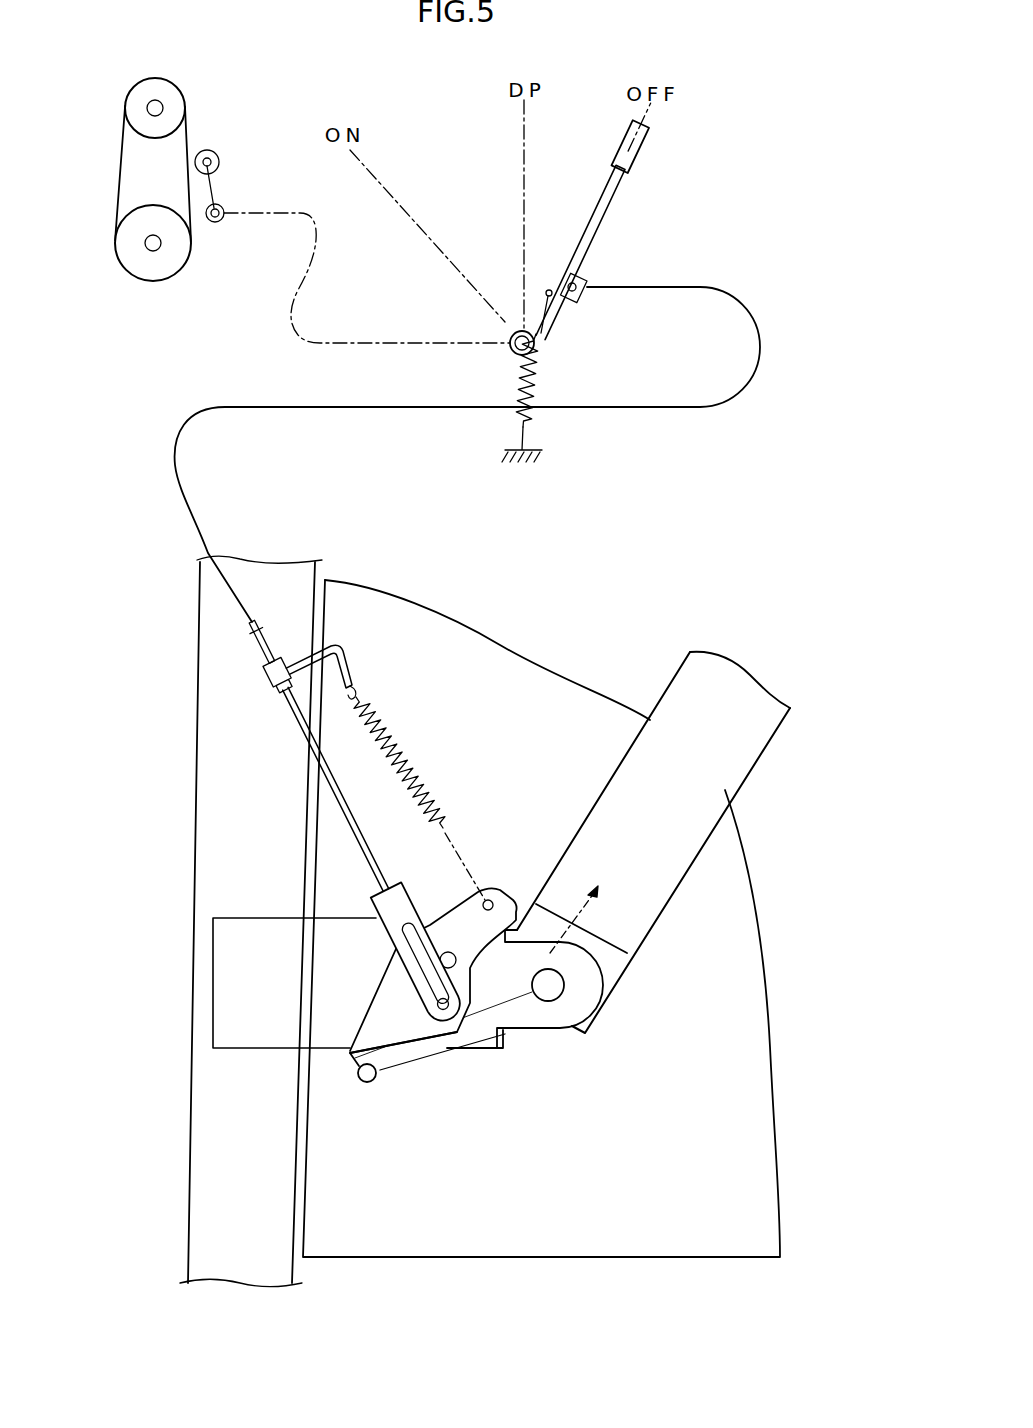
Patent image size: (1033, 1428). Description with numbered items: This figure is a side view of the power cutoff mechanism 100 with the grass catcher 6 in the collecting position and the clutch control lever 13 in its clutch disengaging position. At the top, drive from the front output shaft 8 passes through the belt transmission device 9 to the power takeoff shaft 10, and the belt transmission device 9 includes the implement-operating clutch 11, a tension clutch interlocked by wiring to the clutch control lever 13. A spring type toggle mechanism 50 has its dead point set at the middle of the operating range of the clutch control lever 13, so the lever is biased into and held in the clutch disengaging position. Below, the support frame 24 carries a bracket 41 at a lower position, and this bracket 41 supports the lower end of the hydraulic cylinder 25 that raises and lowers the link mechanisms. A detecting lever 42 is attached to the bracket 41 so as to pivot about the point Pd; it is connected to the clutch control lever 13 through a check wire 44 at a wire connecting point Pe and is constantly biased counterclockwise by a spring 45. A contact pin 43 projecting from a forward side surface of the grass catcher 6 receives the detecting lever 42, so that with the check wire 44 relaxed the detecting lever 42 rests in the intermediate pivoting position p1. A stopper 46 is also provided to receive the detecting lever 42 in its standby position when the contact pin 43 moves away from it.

The grass catcher 6 is at (722, 1045).
The front output shaft 8 is at (152, 108).
The belt transmission device 9 is at (196, 124).
The power takeoff shaft 10 is at (160, 247).
The implement-operating clutch 11 is at (218, 185).
The clutch control lever 13 is at (592, 223).
The support frame 24 is at (232, 815).
The hydraulic cylinder 25 is at (725, 752).
The bracket 41 is at (528, 1022).
The detecting lever 42 is at (395, 978).
The contact pin 43 is at (367, 1085).
The check wire 44 is at (349, 407).
The spring 45 is at (410, 752).
The stopper 46 is at (493, 1040).
The spring type toggle mechanism 50 is at (560, 368).
The power cutoff mechanism 100 is at (457, 841).
The pivot point Pd is at (452, 953).
The wire connecting point Pe is at (425, 1008).
The intermediate pivoting position p1 is at (447, 960).